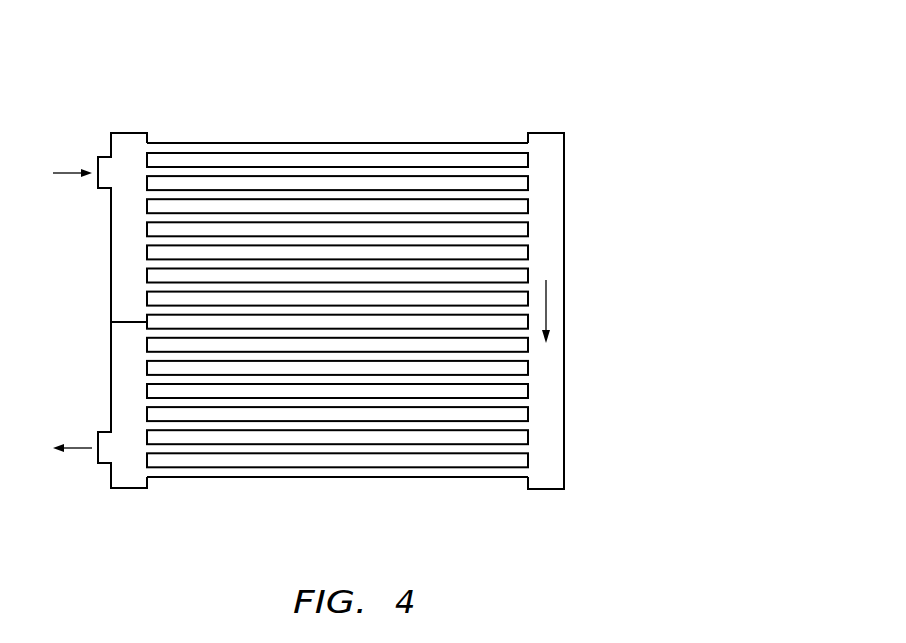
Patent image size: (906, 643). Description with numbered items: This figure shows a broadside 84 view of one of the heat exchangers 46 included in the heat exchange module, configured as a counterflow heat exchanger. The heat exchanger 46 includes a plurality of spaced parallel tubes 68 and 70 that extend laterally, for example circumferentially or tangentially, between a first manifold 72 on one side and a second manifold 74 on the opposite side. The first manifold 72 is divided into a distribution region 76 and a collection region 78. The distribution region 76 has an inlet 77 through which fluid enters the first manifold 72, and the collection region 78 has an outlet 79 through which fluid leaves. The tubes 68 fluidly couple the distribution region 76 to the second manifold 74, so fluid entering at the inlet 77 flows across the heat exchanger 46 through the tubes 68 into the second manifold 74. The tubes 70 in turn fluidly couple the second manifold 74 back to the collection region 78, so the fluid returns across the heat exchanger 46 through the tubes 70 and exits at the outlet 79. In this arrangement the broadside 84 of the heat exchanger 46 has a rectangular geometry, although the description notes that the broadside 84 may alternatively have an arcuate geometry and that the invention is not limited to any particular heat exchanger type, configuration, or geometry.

The heat exchanger 46 is at (600, 127).
The tubes 68 is at (227, 143).
The tubes 70 is at (180, 454).
The first manifold 72 is at (111, 228).
The second manifold 74 is at (566, 215).
The distribution region 76 is at (122, 271).
The collection region 78 is at (121, 386).
The inlet 77 is at (100, 157).
The outlet 79 is at (98, 463).
The broadside 84 is at (455, 185).